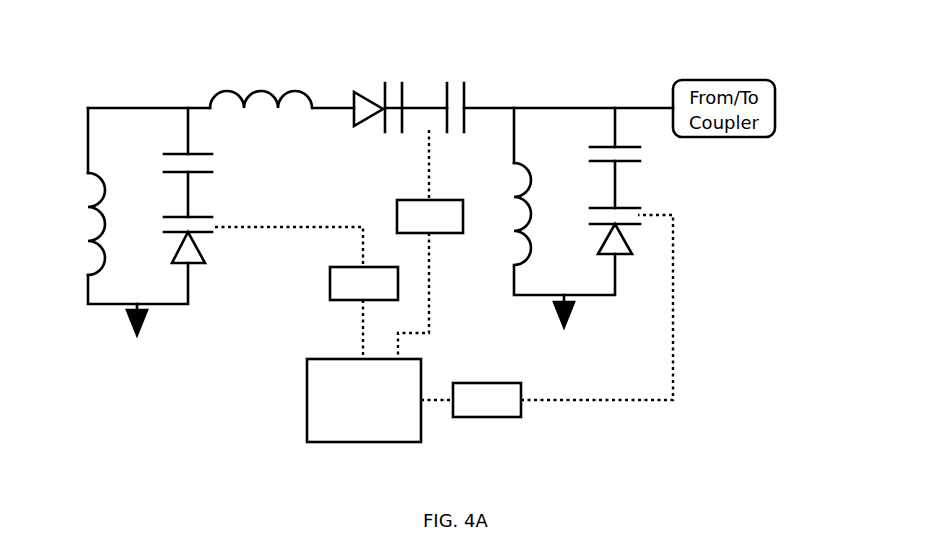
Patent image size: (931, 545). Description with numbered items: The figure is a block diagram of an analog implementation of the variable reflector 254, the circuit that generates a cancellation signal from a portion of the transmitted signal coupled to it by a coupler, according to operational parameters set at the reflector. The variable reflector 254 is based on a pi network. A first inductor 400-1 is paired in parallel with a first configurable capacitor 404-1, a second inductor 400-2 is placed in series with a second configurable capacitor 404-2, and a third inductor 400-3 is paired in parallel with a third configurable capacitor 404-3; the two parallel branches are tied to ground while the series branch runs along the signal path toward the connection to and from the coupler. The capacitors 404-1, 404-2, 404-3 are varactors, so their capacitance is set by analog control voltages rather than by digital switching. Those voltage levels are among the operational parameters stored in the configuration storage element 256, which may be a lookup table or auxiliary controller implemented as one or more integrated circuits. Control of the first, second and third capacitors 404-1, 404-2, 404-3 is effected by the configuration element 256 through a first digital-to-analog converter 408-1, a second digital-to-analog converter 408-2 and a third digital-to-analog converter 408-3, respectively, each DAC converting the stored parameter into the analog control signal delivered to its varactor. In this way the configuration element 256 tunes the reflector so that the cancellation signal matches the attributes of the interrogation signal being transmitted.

The first inductor 400-1 is at (86, 222).
The second inductor 400-2 is at (262, 90).
The third inductor 400-3 is at (515, 262).
The first configurable capacitor 404-1 is at (250, 227).
The second configurable capacitor 404-2 is at (407, 87).
The third configurable capacitor 404-3 is at (640, 207).
The first digital-to-analog converter 408-1 is at (330, 282).
The second digital-to-analog converter 408-2 is at (445, 198).
The third digital-to-analog converter 408-3 is at (506, 417).
The configuration storage element 256 is at (307, 400).
The variable reflector 254 is at (732, 265).